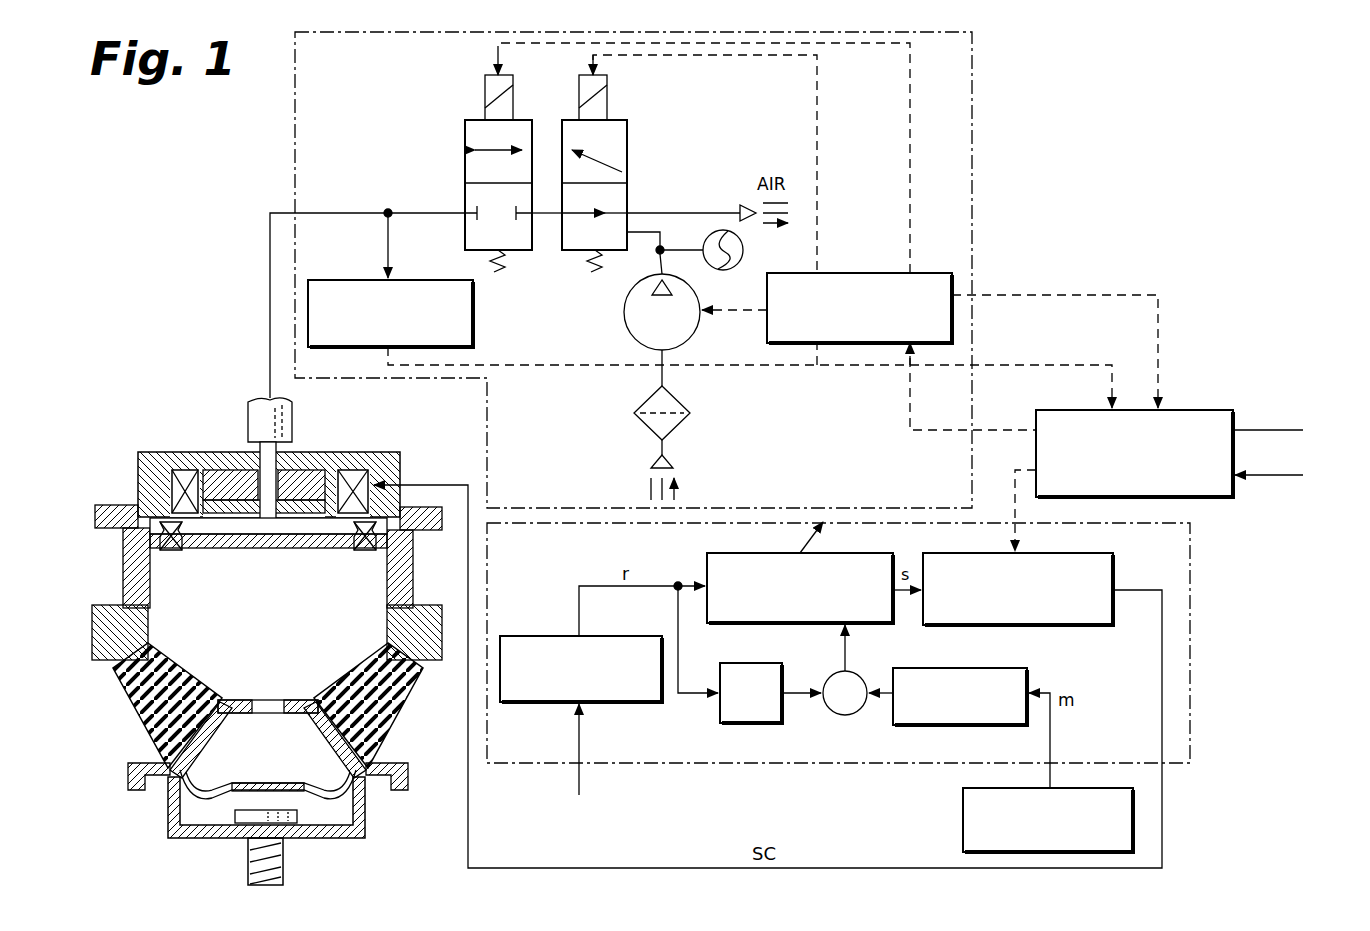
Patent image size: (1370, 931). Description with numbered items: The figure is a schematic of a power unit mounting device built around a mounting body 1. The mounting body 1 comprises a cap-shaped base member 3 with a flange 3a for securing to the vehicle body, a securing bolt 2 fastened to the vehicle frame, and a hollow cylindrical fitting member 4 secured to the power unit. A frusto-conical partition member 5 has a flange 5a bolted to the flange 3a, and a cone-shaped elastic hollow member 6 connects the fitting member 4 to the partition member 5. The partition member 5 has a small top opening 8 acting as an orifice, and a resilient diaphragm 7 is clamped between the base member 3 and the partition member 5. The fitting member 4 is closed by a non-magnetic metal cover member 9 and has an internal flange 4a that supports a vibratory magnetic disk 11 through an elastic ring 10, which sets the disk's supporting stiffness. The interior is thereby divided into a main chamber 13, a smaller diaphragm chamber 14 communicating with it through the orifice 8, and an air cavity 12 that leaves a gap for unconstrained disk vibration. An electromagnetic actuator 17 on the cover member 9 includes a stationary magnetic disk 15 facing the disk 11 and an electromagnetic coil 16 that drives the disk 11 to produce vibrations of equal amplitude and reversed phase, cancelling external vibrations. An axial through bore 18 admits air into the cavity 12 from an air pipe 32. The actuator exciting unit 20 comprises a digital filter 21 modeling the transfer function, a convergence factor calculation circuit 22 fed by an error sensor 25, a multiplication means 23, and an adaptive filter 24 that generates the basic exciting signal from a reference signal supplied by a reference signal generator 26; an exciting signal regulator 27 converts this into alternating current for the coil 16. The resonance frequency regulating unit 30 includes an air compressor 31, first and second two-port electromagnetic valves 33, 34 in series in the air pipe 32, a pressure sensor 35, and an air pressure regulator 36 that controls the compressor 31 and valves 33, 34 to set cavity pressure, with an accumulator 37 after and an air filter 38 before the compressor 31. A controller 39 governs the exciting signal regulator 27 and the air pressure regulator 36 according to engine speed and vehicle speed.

The mounting body 1 is at (142, 432).
The securing bolt 2 is at (283, 866).
The cap-shaped base member 3 is at (365, 826).
The flange 3a is at (140, 792).
The hollow cylindrical fitting member 4 is at (123, 578).
The internal flange 4a is at (150, 540).
The frusto-conical partition member 5 is at (360, 738).
The flange 5a is at (136, 765).
The cone-shaped elastic hollow member 6 is at (142, 694).
The resilient diaphragm 7 is at (292, 782).
The small top opening 8 is at (268, 698).
The non-magnetic metal cover member 9 is at (183, 452).
The elastic ring 10 is at (178, 552).
The vibratory magnetic disk 11 is at (318, 548).
The air cavity 12 is at (220, 530).
The main chamber 13 is at (281, 620).
The diaphragm chamber 14 is at (260, 756).
The stationary magnetic disk 15 is at (312, 465).
The electromagnetic coil 16 is at (350, 468).
The electromagnetic actuator 17 is at (278, 449).
The axial through bore 18 is at (246, 452).
The actuator exciting unit 20 is at (1190, 640).
The digital filter 21 is at (782, 715).
The convergence factor calculation circuit 22 is at (1027, 672).
The multiplication means 23 is at (850, 715).
The adaptive filter 24 is at (707, 557).
The error sensor 25 is at (963, 825).
The reference signal generator 26 is at (552, 636).
The exciting signal regulator 27 is at (1113, 560).
The resonance frequency regulating unit 30 is at (972, 87).
The air compressor 31 is at (624, 312).
The air pipe 32 is at (348, 213).
The first two-port electromagnetic valve 33 is at (465, 130).
The second two-port electromagnetic valve 34 is at (627, 128).
The pressure sensor 35 is at (473, 317).
The air pressure regulator 36 is at (862, 273).
The accumulator 37 is at (743, 250).
The air filter 38 is at (677, 398).
The controller 39 is at (1208, 410).